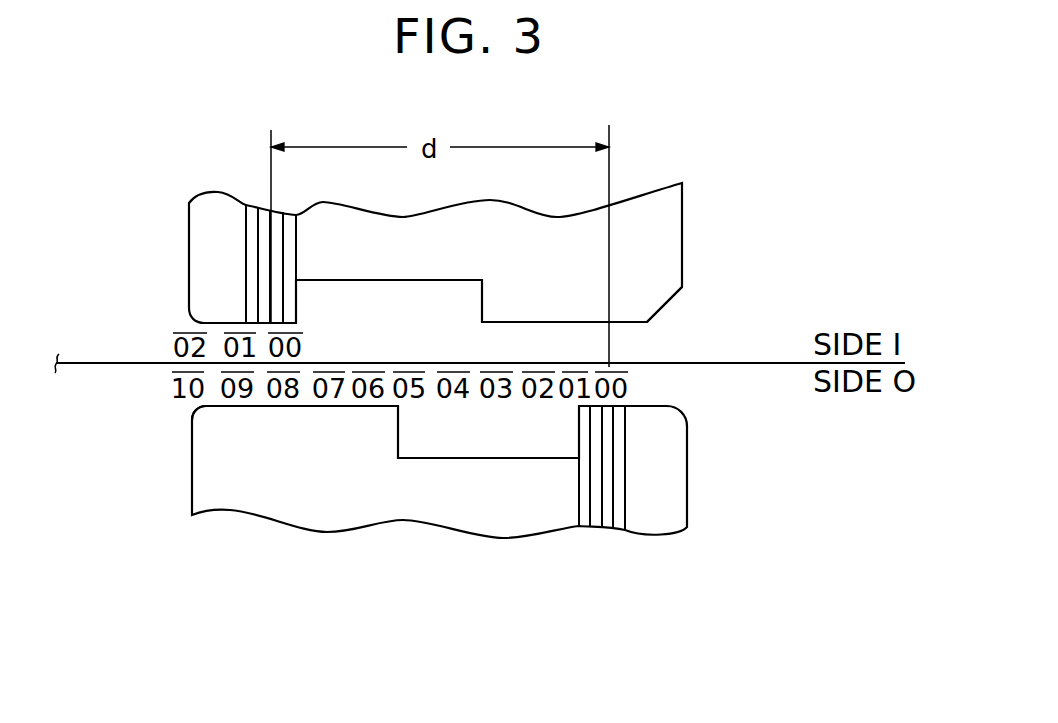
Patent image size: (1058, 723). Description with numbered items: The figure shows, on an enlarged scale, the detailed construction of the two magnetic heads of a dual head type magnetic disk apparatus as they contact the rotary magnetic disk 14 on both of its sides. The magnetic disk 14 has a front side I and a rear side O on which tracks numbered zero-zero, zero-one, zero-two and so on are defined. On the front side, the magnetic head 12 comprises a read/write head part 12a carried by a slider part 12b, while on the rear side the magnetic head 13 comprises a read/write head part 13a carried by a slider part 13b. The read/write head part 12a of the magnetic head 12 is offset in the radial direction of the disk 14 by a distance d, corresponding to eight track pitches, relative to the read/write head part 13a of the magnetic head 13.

The magnetic head 12 is at (413, 243).
The read/write head part 12a is at (222, 252).
The slider part 12b is at (630, 323).
The magnetic head 13 is at (432, 491).
The read/write head part 13a is at (627, 467).
The slider part 13b is at (208, 404).
The rotary magnetic disk 14 is at (98, 363).